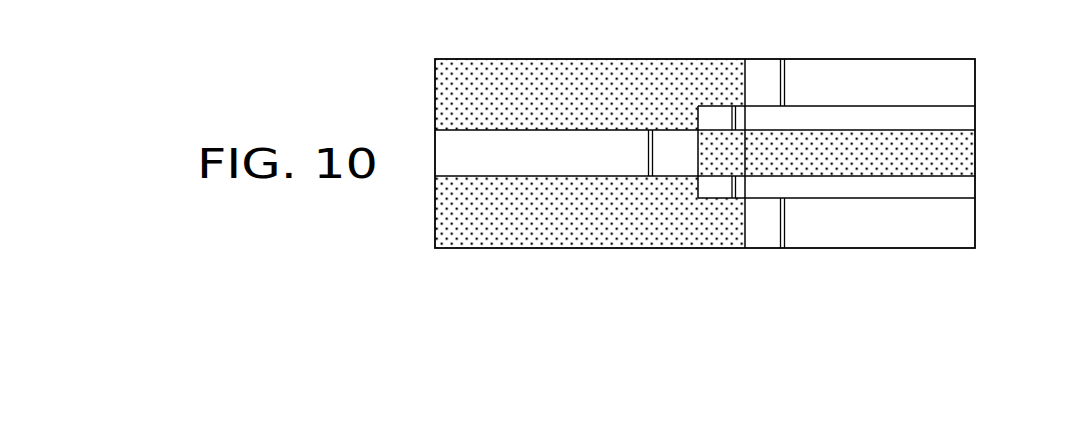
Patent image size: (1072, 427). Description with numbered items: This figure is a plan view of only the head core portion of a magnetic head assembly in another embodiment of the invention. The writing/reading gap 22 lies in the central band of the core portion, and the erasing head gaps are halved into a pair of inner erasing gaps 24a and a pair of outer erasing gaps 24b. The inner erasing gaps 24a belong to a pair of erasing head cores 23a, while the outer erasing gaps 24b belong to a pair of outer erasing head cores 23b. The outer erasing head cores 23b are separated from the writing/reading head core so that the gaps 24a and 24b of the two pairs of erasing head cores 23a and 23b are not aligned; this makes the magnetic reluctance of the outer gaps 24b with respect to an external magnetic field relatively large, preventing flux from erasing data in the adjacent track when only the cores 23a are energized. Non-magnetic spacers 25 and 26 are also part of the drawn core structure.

The writing/reading gap 22 is at (650, 148).
The erasing head core 23a is at (971, 117).
The erasing head core 23b is at (967, 80).
The erasing gap 24a is at (731, 188).
The erasing gap 24b is at (782, 223).
The non-magnetic spacer 25 is at (548, 185).
The non-magnetic spacer 26 is at (882, 133).